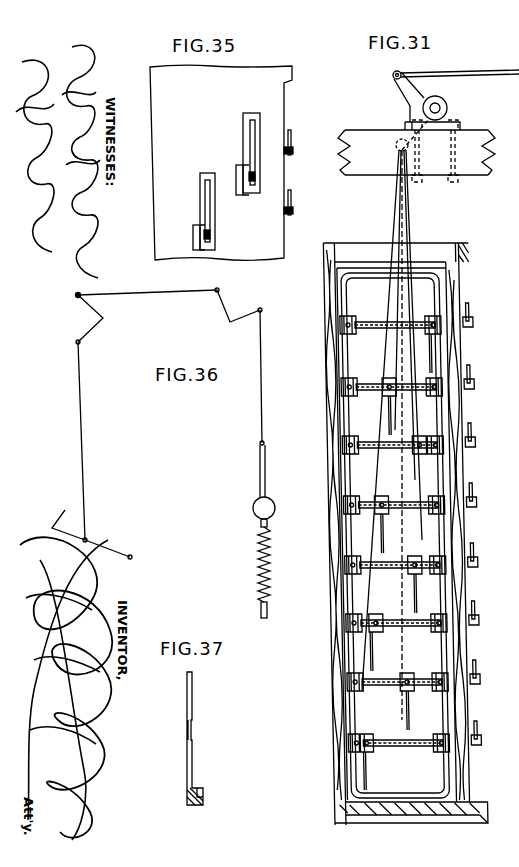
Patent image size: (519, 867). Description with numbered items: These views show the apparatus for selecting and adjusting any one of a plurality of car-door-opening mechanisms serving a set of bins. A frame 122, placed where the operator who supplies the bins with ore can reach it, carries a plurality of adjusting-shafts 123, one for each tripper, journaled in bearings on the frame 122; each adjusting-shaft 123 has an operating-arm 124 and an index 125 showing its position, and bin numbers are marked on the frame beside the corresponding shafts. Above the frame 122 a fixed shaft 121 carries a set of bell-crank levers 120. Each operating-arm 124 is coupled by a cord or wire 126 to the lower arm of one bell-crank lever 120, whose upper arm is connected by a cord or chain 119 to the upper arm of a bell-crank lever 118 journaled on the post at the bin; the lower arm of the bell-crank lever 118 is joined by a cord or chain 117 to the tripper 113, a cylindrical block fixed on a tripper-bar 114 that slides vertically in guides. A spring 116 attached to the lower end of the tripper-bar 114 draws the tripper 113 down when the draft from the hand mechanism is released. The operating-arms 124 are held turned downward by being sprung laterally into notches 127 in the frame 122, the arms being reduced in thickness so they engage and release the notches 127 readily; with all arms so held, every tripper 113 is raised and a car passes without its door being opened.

In FIG. 36, the tripper 113 is at (254, 508).
In FIG. 36, the tripper-bar 114 is at (260, 470).
In FIG. 36, the spring 116 is at (246, 568).
In FIG. 36, the cord or chain 117 is at (244, 377).
In FIG. 36, the bell-crank lever 118 is at (239, 306).
In FIG. 31, the cord or chain 119 is at (459, 66).
In FIG. 36, the cord or chain 119 is at (148, 301).
In FIG. 31, the bell-crank lever 120 is at (415, 100).
In FIG. 36, the bell-crank lever 120 is at (80, 319).
In FIG. 31, the shaft 121 is at (447, 108).
In FIG. 35, the frame 122 is at (221, 162).
In FIG. 31, the frame 122 is at (407, 534).
In FIG. 31, the adjusting-shaft 123 is at (373, 323).
In FIG. 35, the operating-arm 124 is at (250, 170).
In FIG. 31, the operating-arm 124 is at (400, 702).
In FIG. 36, the operating-arm 124 is at (114, 544).
In FIG. 35, the index 125 is at (300, 160).
In FIG. 31, the index 125 is at (338, 168).
In FIG. 36, the index 125 is at (56, 519).
In FIG. 31, the cord or wire 126 is at (396, 240).
In FIG. 36, the cord or wire 126 is at (99, 442).
In FIG. 35, the notch 127 is at (247, 188).